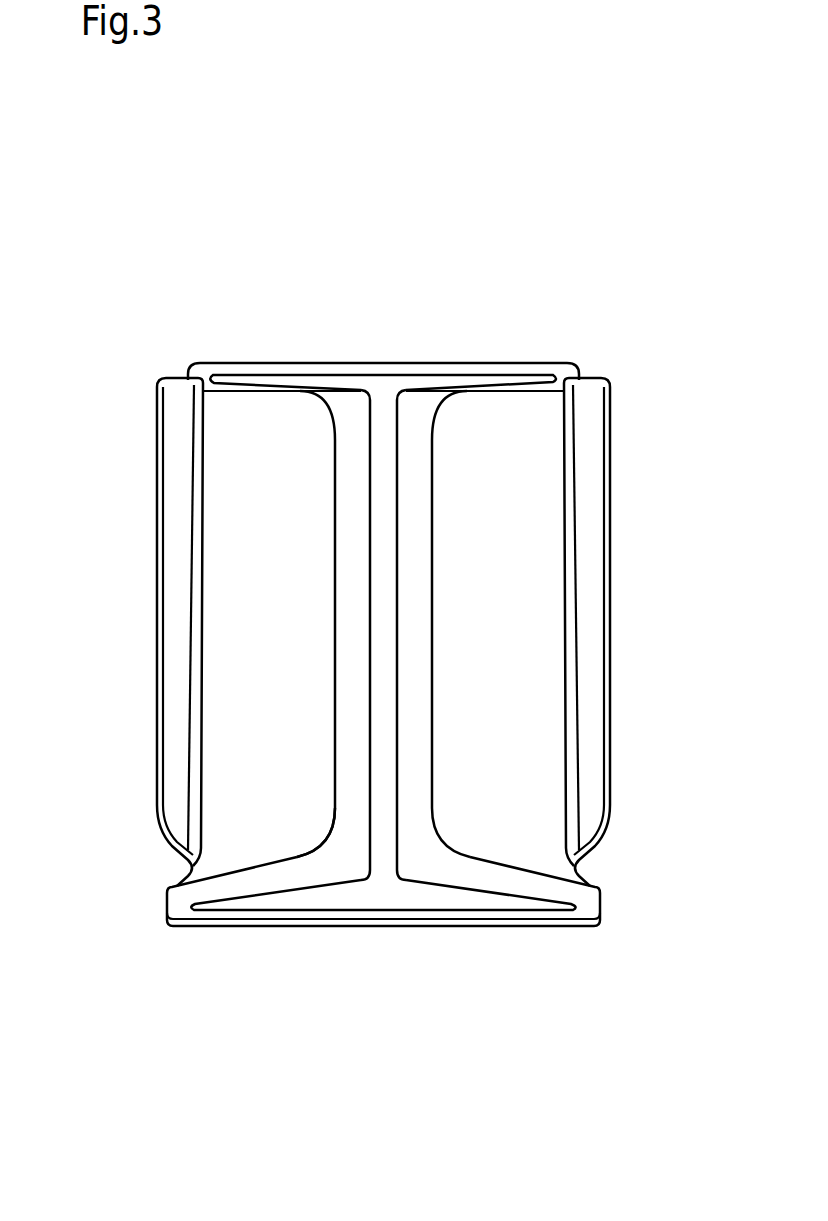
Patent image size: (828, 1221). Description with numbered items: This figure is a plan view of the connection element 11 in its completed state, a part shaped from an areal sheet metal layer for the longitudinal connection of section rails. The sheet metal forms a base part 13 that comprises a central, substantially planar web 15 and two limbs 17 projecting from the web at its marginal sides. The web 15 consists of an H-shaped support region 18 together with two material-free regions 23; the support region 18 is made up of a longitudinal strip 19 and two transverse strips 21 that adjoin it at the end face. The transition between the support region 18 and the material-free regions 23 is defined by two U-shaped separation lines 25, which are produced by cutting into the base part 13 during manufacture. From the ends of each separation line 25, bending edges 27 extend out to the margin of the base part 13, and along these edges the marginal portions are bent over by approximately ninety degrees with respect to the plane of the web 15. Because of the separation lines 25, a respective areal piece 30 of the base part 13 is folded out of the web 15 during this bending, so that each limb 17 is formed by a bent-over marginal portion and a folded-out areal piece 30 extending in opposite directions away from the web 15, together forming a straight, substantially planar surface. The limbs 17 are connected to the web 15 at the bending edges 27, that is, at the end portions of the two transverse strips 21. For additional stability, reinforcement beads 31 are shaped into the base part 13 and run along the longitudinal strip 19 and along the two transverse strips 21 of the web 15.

The connection element 11 is at (266, 291).
The base part 13 is at (457, 364).
The web 15 is at (380, 942).
The limbs 17 is at (157, 501).
The support region 18 is at (345, 838).
The longitudinal strip 19 is at (413, 737).
The transverse strips 21 is at (498, 372).
The material-free regions 23 is at (272, 533).
The separation lines 25 is at (333, 472).
The bending edges 27 is at (203, 358).
The folded-out areal piece 30 is at (175, 683).
The reinforcement beads 31 is at (347, 383).